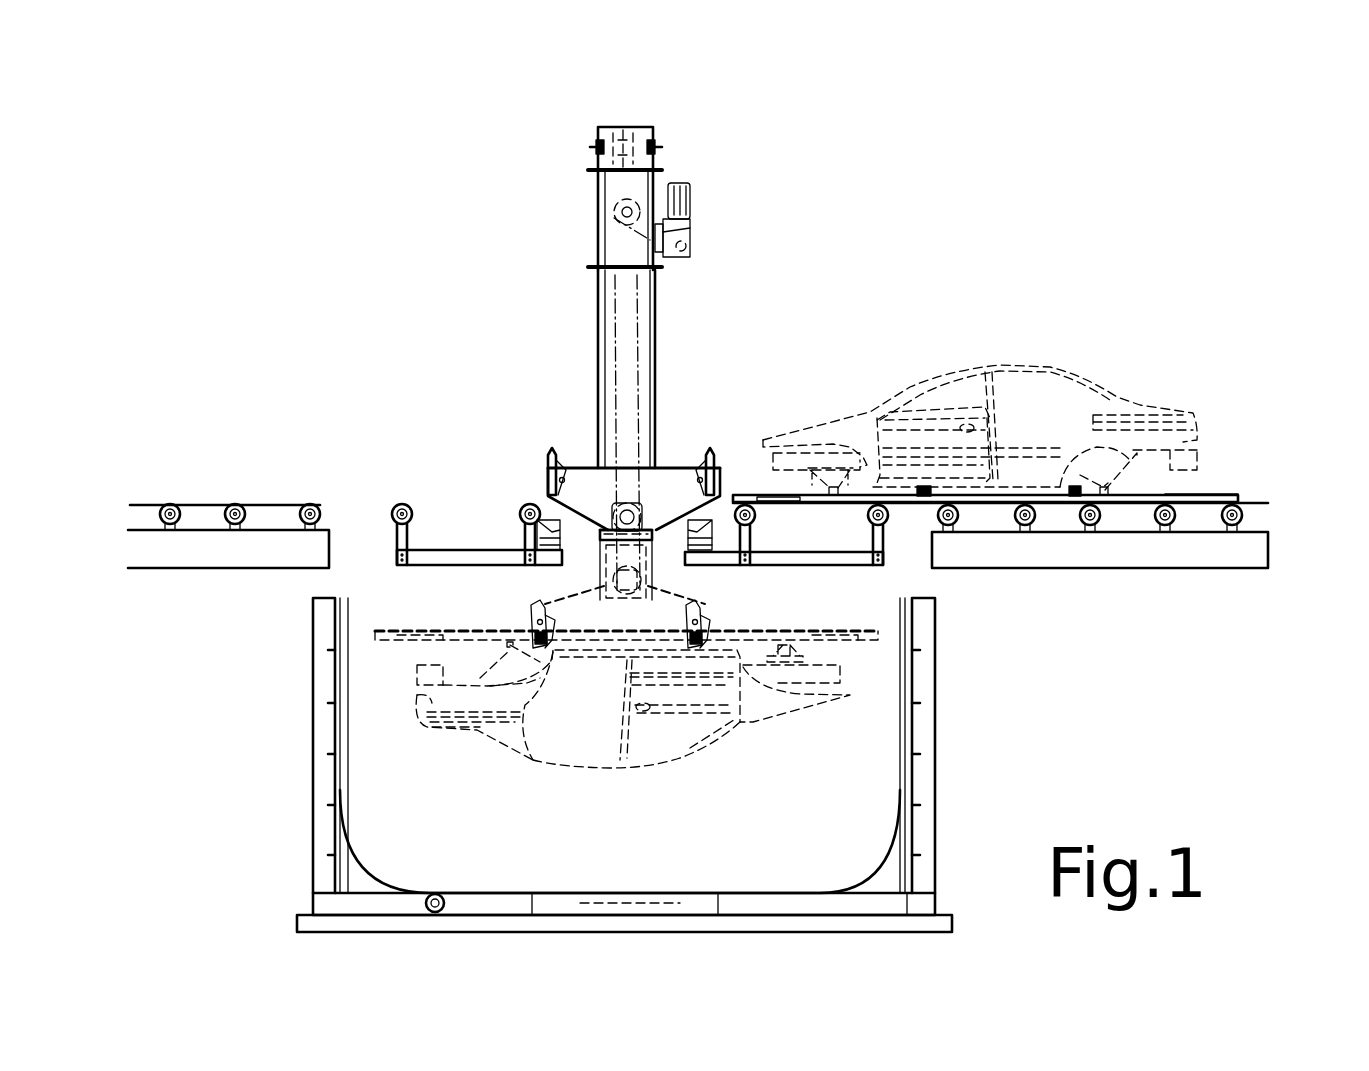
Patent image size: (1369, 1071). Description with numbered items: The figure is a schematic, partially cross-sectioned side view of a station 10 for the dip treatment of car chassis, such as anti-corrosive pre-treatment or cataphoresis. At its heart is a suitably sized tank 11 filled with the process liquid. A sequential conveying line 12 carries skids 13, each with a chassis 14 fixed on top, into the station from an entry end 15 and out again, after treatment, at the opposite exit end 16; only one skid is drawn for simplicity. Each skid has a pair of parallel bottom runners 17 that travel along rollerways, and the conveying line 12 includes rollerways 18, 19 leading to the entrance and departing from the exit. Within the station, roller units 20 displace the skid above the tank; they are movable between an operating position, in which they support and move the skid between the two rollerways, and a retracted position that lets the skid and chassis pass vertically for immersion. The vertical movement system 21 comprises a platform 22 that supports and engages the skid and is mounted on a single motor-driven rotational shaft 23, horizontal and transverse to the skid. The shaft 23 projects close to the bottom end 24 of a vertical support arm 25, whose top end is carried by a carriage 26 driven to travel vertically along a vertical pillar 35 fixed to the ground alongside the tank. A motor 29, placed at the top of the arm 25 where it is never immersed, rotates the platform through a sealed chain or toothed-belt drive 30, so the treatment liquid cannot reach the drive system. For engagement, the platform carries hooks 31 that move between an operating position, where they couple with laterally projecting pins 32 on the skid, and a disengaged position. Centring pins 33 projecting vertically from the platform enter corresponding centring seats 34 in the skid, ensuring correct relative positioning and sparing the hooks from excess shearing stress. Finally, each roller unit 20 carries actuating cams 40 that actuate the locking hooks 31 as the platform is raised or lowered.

The station 10 is at (1028, 236).
The tank 11 is at (898, 777).
The sequential conveying line 12 is at (303, 405).
The skid 13 is at (1190, 492).
The chassis 14 is at (905, 385).
The entry end 15 is at (1218, 384).
The exit end 16 is at (118, 430).
The bottom runners 17 is at (985, 508).
The rollerway 18 is at (1262, 519).
The rollerway 19 is at (133, 511).
The roller units 20 is at (432, 577).
The vertical movement system 21 is at (548, 250).
The platform 22 is at (577, 462).
The rotational shaft 23 is at (652, 558).
The bottom end 24 is at (605, 540).
The vertical support arm 25 is at (605, 304).
The carriage 26 is at (598, 190).
The motor 29 is at (685, 229).
The chain or toothed-belt drive 30 is at (638, 310).
The hooks 31 is at (550, 455).
The laterally projecting pins 32 is at (925, 488).
The centring pins 33 is at (548, 465).
The centring seats 34 is at (900, 506).
The vertical pillar 35 is at (655, 143).
The actuating cams 40 is at (540, 520).